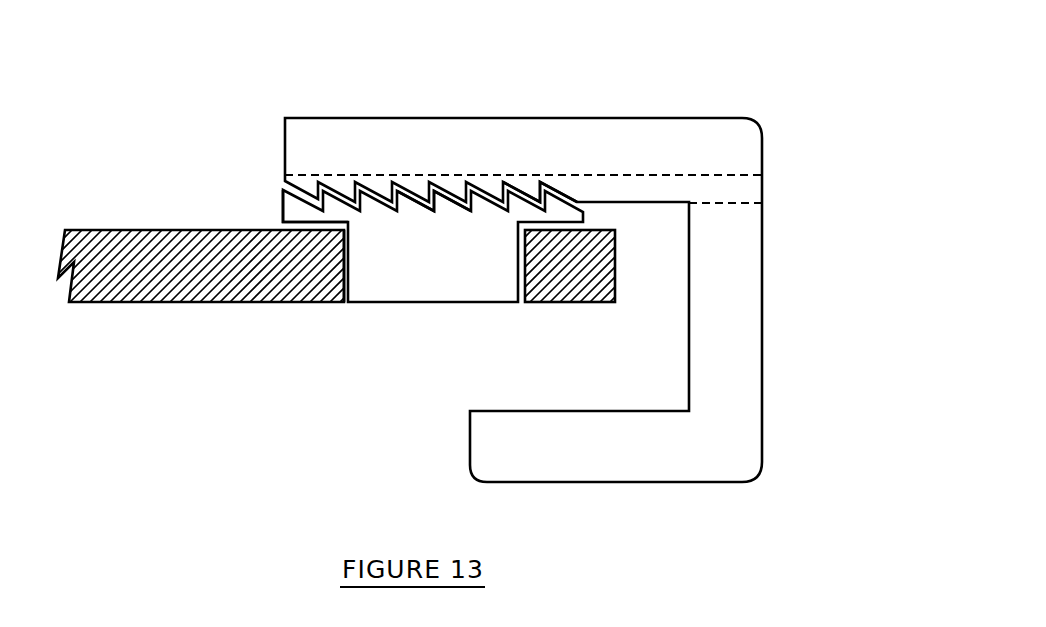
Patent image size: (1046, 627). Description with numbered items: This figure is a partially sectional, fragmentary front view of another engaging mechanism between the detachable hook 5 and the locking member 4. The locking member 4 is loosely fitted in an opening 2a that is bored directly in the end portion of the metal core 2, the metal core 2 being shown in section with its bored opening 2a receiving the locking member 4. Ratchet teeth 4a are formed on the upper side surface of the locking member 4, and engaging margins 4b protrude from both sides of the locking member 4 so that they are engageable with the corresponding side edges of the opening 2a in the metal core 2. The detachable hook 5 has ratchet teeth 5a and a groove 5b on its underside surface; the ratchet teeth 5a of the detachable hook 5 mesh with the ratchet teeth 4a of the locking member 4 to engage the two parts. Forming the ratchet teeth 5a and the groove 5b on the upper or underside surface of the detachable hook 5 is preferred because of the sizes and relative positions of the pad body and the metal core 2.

The metal core 2 is at (167, 300).
The opening 2a is at (348, 300).
The locking member 4 is at (437, 290).
The ratchet teeth 4a is at (410, 190).
The engaging margins 4b is at (287, 218).
The detachable hook 5 is at (737, 362).
The ratchet teeth 5a is at (537, 190).
The groove 5b is at (750, 185).